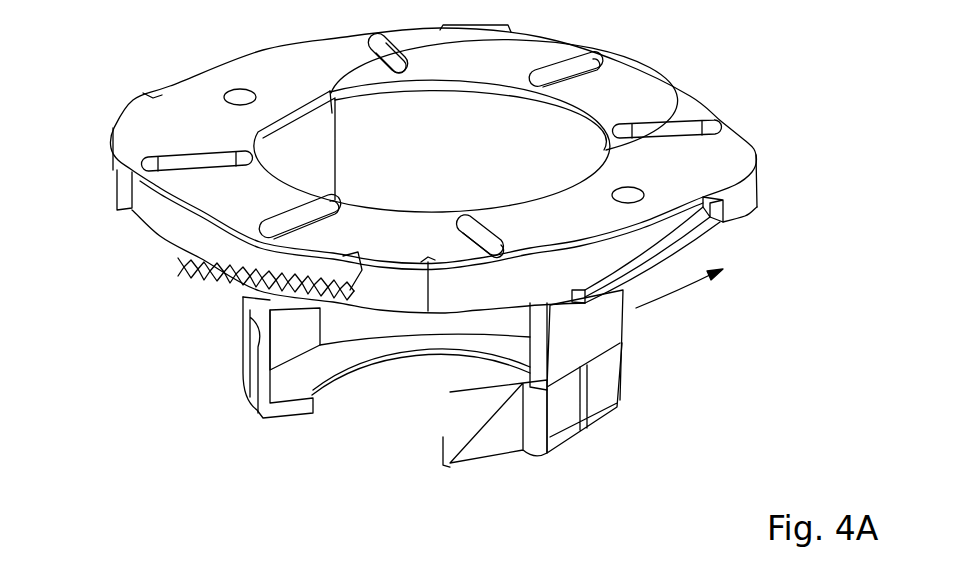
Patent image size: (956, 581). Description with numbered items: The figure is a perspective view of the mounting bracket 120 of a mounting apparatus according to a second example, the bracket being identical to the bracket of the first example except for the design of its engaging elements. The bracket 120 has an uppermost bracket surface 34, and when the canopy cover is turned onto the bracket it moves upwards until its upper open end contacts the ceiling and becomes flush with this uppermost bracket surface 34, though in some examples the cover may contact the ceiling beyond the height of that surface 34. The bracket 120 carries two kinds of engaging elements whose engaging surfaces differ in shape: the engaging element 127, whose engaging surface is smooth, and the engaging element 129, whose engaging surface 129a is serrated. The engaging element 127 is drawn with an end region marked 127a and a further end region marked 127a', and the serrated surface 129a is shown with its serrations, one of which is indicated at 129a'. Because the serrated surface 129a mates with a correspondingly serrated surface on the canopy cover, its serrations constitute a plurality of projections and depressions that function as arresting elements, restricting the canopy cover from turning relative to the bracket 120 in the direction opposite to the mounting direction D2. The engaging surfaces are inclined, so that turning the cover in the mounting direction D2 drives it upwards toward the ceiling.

The uppermost bracket surface 34 is at (195, 112).
The mounting bracket 120 is at (736, 351).
The engaging element 127 is at (693, 253).
The cam rib end stop 127a is at (780, 223).
The cam rib start end 127a' is at (432, 387).
The engaging element 129 is at (300, 295).
The engaging surface 129a is at (210, 304).
The tooth tips 129a' is at (190, 269).
The mounting direction D2 is at (667, 300).